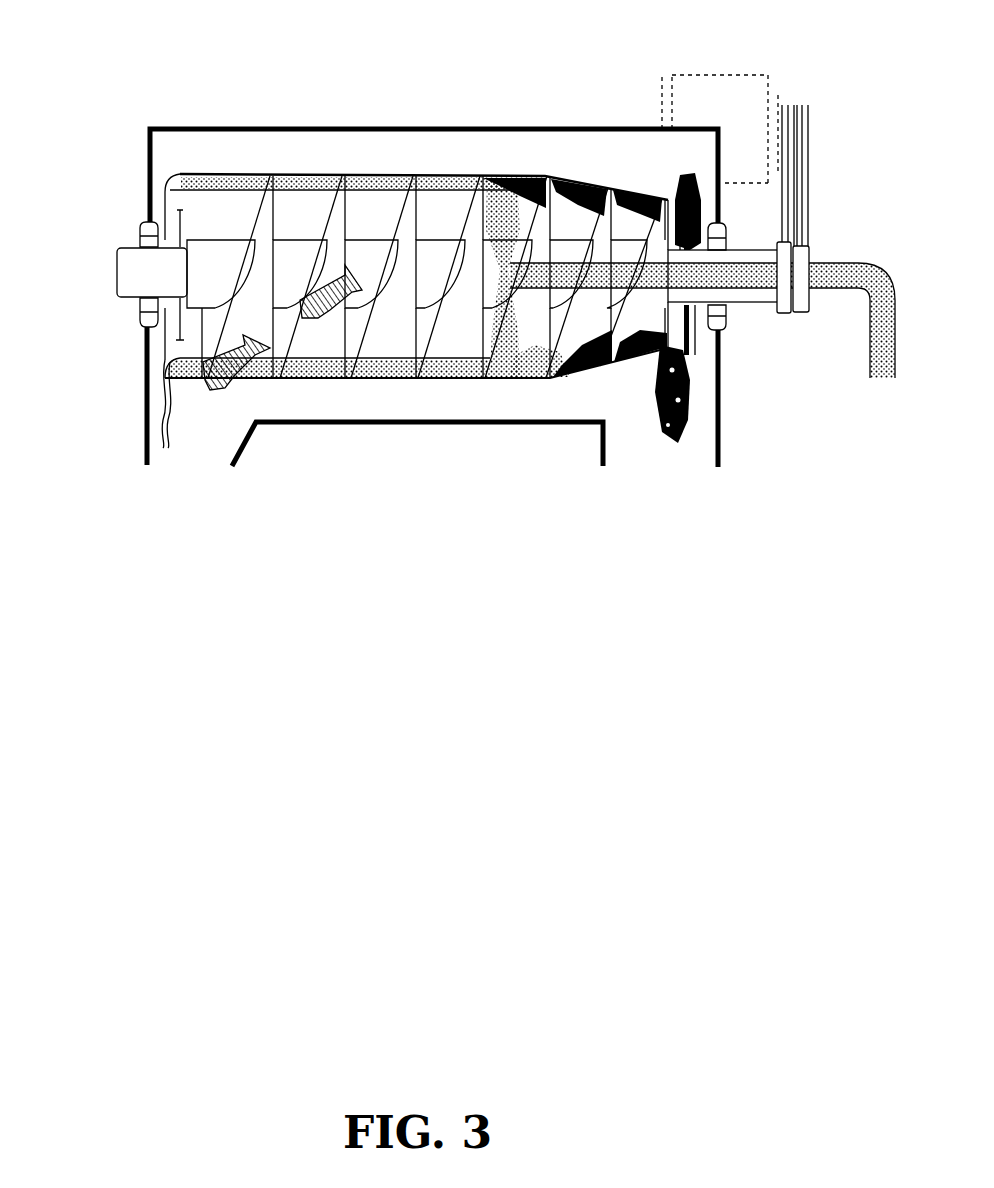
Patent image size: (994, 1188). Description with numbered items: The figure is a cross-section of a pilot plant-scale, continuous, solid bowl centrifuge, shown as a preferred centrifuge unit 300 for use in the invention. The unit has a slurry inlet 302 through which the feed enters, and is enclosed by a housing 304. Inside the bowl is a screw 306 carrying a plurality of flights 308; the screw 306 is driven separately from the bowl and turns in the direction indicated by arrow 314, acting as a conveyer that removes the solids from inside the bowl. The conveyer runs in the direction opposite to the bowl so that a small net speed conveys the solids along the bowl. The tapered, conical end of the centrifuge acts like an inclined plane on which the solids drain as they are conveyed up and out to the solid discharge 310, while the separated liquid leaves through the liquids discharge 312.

The centrifuge unit 300 is at (389, 104).
The slurry inlet 302 is at (782, 380).
The housing 304 is at (518, 128).
The screw 306 is at (115, 278).
The flights 308 is at (308, 222).
The solid discharge 310 is at (650, 580).
The liquids discharge 312 is at (155, 580).
The arrow 314 is at (323, 322).